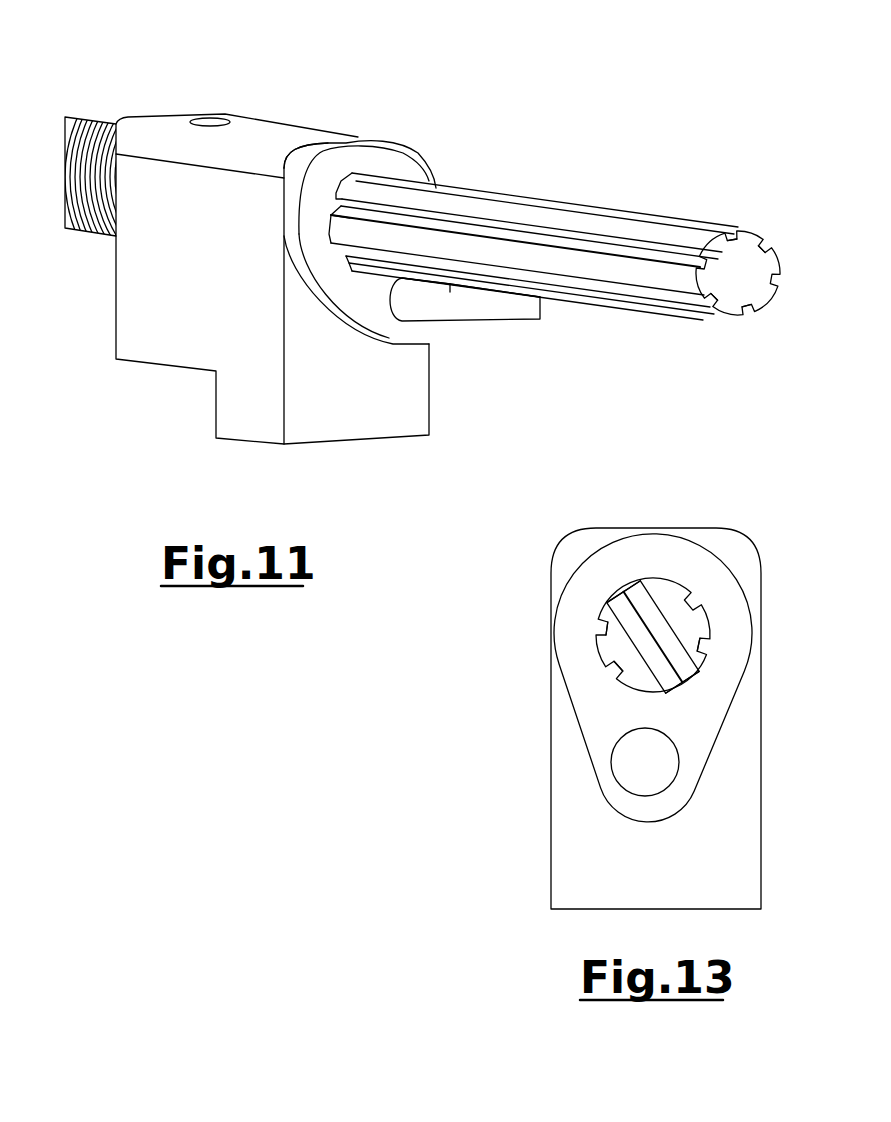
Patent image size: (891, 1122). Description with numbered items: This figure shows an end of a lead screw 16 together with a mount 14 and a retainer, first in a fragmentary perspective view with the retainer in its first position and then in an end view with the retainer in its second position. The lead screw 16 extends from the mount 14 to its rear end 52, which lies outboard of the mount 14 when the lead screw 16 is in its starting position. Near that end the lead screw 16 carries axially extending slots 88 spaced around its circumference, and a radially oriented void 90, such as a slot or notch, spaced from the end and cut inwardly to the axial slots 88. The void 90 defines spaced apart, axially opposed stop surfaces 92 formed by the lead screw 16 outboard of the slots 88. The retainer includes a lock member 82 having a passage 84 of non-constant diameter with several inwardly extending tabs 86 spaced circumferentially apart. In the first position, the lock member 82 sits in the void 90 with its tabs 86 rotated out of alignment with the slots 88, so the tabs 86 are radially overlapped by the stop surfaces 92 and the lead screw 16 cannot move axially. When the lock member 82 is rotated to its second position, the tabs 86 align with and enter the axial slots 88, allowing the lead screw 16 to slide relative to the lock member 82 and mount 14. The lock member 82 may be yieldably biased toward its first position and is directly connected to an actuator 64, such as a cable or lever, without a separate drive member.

In FIG. 11, the mount 14 is at (403, 430).
In FIG. 13, the mount 14 is at (745, 857).
In FIG. 11, the lead screw 16 is at (527, 213).
In FIG. 11, the rear end 52 is at (743, 281).
In FIG. 11, the actuator 64 is at (510, 323).
In FIG. 13, the lock member 82 is at (740, 614).
In FIG. 13, the passage 84 is at (707, 640).
In FIG. 13, the tabs 86 is at (700, 600).
In FIG. 11, the axially extending slots 88 is at (688, 256).
In FIG. 13, the axially extending slots 88 is at (622, 667).
In FIG. 11, the void 90 is at (338, 258).
In FIG. 11, the stop surfaces 92 is at (348, 176).